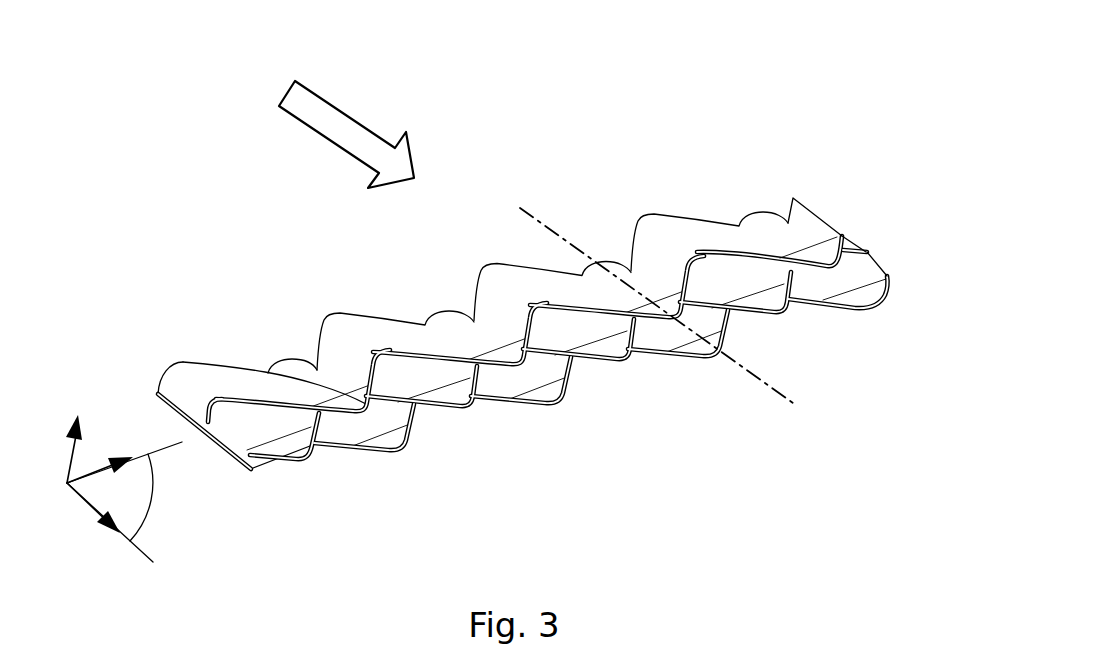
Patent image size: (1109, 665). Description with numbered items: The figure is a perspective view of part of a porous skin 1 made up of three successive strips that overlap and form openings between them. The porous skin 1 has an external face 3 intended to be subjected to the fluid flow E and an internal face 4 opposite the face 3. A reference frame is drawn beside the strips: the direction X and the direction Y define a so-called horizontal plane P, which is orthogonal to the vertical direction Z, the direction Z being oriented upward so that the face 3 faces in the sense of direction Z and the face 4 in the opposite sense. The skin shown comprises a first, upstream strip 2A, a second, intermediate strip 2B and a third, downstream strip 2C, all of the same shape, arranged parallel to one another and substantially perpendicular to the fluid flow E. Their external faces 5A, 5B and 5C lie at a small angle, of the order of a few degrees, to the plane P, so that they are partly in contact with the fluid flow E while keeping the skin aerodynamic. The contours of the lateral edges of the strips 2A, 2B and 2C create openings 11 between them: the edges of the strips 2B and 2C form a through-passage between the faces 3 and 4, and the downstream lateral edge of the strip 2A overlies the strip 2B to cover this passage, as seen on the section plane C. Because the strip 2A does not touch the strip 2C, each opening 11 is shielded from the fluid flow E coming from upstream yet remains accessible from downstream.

The porous skin 1 is at (818, 117).
The upstream strip 2A is at (805, 233).
The intermediate strip 2B is at (737, 282).
The downstream strip 2C is at (843, 275).
The external face 3 is at (322, 247).
The internal face 4 is at (335, 478).
The external face of upstream strip 5A is at (345, 365).
The external face of intermediate strip 5B is at (263, 432).
The external face of downstream strip 5C is at (367, 429).
The opening 11 is at (518, 365).
The fluid flow E is at (352, 116).
The section plane C- C is at (552, 218).
The direction X is at (97, 470).
The direction Y is at (80, 498).
The direction Z is at (68, 460).
The horizontal plane P is at (124, 502).